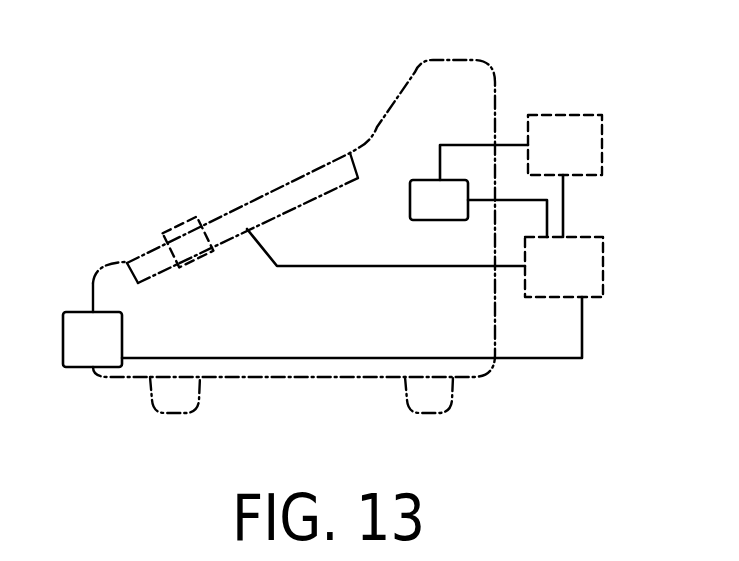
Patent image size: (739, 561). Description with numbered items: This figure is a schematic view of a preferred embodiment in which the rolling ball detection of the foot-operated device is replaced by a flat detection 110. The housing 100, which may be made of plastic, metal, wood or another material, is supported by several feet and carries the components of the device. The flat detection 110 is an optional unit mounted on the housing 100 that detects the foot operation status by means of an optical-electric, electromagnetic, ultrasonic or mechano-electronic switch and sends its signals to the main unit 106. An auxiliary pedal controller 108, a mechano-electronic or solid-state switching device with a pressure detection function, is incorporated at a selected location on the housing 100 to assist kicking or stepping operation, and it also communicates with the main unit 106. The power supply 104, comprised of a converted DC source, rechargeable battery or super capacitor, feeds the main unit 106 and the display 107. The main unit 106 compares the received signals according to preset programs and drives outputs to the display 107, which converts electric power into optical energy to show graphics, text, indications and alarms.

The housing 100 is at (473, 58).
The power supply 104 is at (439, 201).
The main unit 106 is at (564, 267).
The display 107 is at (565, 145).
The auxiliary pedal controller 108 is at (182, 220).
The flat detection 110 is at (237, 208).